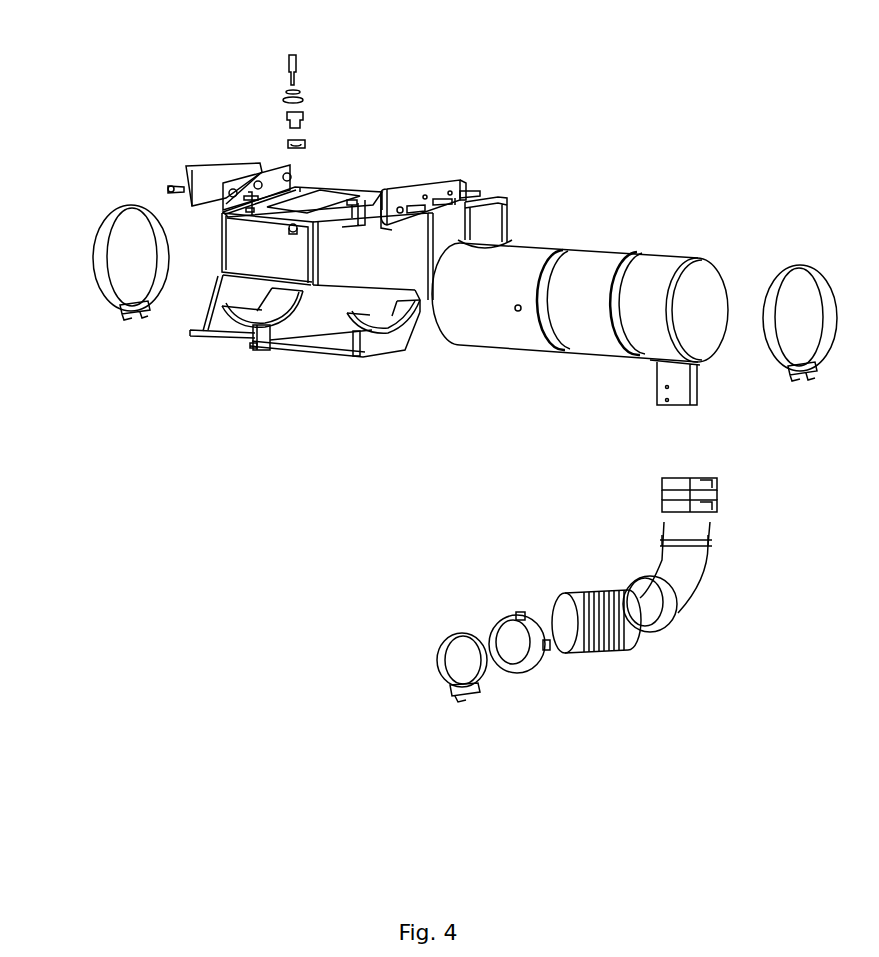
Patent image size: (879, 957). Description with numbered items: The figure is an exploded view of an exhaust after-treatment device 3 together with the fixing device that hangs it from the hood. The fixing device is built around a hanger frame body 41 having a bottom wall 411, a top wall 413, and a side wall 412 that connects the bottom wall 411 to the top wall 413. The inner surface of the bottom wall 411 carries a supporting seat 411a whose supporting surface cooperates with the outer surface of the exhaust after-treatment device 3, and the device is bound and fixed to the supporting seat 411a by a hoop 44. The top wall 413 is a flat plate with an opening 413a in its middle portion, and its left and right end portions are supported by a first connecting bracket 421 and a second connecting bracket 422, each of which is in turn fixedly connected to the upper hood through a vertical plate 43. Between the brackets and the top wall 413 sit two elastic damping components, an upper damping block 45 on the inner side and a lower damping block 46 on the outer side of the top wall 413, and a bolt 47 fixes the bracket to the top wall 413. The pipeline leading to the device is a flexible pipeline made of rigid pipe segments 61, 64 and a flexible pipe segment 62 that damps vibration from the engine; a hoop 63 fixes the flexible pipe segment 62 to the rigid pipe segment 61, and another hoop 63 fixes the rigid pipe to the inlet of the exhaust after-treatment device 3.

The exhaust after-treatment device 3 is at (597, 263).
The hanger frame body 41 is at (255, 345).
The bottom wall 411 is at (315, 343).
The supporting seat 411a is at (275, 313).
The side wall 412 is at (402, 253).
The top wall 413 is at (358, 183).
The opening 413a is at (328, 197).
The first connecting bracket 421 is at (200, 168).
The second connecting bracket 422 is at (380, 187).
The vertical plate 43 is at (233, 172).
The hoop 44 is at (105, 307).
The upper damping block 45 is at (285, 140).
The lower damping block 46 is at (305, 120).
The bolt 47 is at (297, 77).
The rigid pipe segment 61 is at (688, 580).
The flexible pipe segment 62 is at (617, 645).
The hoop 63 is at (670, 493).
The rigid pipe segment 64 is at (535, 658).